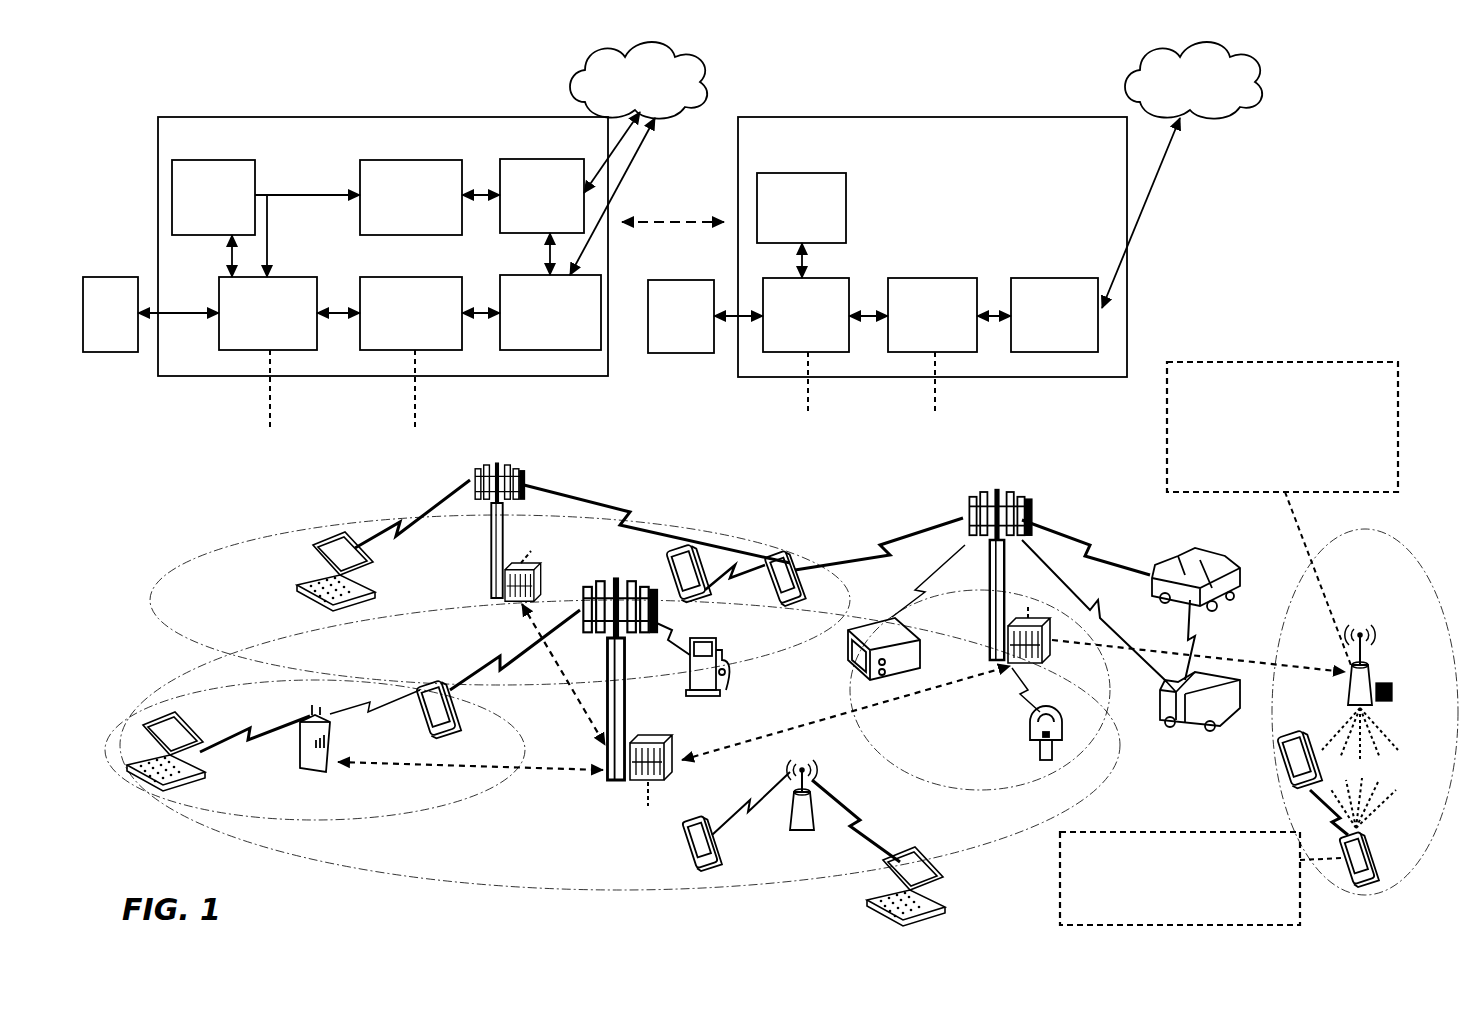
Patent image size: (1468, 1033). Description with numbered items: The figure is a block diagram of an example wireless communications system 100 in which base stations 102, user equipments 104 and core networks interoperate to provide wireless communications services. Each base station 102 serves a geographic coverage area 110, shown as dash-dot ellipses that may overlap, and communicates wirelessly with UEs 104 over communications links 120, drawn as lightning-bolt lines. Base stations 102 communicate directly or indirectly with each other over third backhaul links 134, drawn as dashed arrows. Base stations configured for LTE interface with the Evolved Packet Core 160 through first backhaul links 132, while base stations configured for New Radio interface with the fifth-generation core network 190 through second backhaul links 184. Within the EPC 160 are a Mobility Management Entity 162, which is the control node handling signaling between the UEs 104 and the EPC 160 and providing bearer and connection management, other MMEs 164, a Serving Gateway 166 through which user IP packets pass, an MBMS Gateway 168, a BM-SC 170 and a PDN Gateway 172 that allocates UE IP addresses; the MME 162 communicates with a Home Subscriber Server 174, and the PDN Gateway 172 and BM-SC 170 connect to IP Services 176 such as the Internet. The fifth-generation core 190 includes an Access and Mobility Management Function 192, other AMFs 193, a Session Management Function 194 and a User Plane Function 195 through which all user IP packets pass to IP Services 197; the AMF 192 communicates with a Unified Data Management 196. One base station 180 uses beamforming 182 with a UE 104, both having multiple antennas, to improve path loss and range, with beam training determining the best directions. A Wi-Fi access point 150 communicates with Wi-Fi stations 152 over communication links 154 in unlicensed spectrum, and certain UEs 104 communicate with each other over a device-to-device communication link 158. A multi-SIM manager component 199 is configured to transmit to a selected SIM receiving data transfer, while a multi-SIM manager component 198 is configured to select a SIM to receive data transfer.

The wireless communications system 100 is at (150, 95).
The base station 102 is at (490, 578).
The user equipment 104 is at (348, 606).
The geographic coverage area 110 is at (210, 652).
The communications link 120 is at (408, 512).
The first backhaul link 132 is at (272, 378).
The third backhaul link 134 is at (582, 698).
The Wi-Fi access point 150 is at (798, 836).
The Wi-Fi station 152 is at (686, 860).
The communication link 154 is at (730, 820).
The device-to-device communication link 158 is at (752, 586).
The Evolved Packet Core 160 is at (316, 166).
The Mobility Management Entity 162 is at (286, 277).
The other MMEs 164 is at (186, 160).
The Serving Gateway 166 is at (426, 277).
The Multimedia Broadcast Multicast Service Gateway 168 is at (390, 160).
The Broadcast Multicast Service Center 170 is at (535, 160).
The Packet Data Network Gateway 172 is at (512, 275).
The Home Subscriber Server 174 is at (112, 277).
The IP Services 176 is at (712, 80).
The base station 180 is at (1360, 612).
The beamforming 182 is at (1394, 720).
The second backhaul link 184 is at (810, 382).
The 5G Core network 190 is at (936, 186).
The Access and Mobility Management Function 192 is at (822, 278).
The other AMFs 193 is at (795, 173).
The Session Management Function 194 is at (948, 278).
The User Plane Function 195 is at (1080, 278).
The Unified Data Management 196 is at (704, 280).
The IP Services 197 is at (1256, 70).
The multi-SIM manager component 198 is at (1188, 832).
The multi-SIM manager component 199 is at (1280, 362).